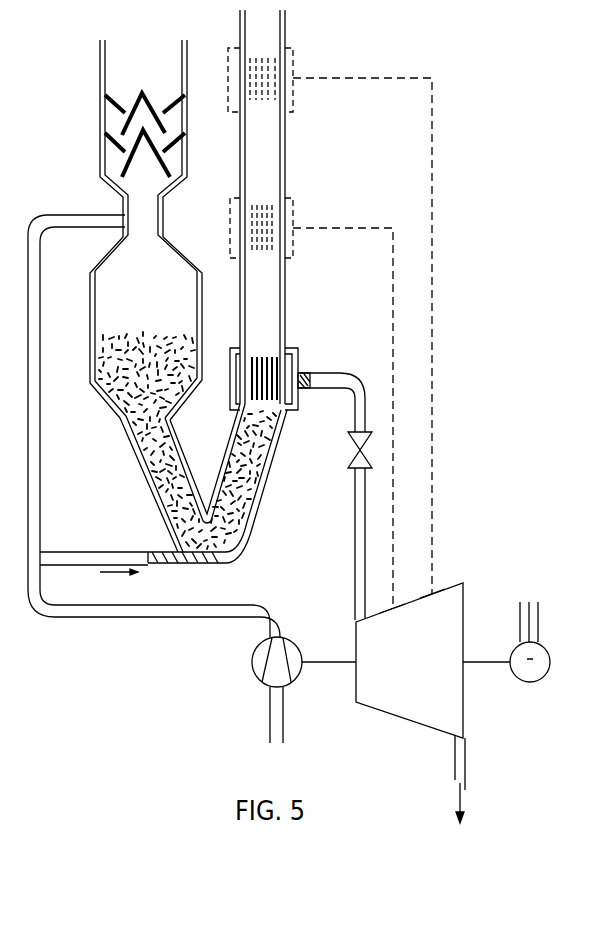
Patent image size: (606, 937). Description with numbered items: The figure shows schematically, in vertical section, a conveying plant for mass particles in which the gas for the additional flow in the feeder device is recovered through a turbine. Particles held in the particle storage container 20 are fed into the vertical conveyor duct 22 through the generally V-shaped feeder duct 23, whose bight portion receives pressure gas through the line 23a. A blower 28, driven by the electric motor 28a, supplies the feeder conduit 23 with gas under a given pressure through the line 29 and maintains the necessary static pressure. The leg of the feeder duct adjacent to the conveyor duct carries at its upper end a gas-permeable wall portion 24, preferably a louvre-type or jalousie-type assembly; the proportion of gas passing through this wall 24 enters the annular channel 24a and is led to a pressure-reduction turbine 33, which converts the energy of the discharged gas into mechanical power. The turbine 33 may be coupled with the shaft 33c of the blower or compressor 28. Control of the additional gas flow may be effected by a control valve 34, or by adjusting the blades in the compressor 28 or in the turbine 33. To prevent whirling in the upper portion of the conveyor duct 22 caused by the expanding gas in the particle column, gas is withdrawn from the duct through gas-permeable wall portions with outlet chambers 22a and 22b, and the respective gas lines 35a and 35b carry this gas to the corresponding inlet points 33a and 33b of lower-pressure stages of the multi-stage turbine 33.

The particle storage container 20 is at (105, 357).
The vertical conveyor duct 22 is at (286, 137).
The gas-permeable wall portion and gas outlet chamber 22a is at (295, 212).
The gas-permeable wall portion and gas outlet chamber 22b is at (293, 63).
The feeder duct 23 is at (156, 478).
The line 23a is at (98, 558).
The gas-permeable wall portion 24 is at (268, 355).
The annular channel space 24a is at (292, 372).
The blower 28 is at (258, 659).
The electric motor 28a is at (531, 668).
The line 29 is at (112, 613).
The pressure-reduction turbine 33 is at (400, 702).
The inlet point 33a is at (393, 605).
The inlet point 33b is at (432, 593).
The shaft 33c is at (333, 663).
The control valve 34 is at (354, 455).
The gas line 35a is at (367, 225).
The gas line 35b is at (436, 197).